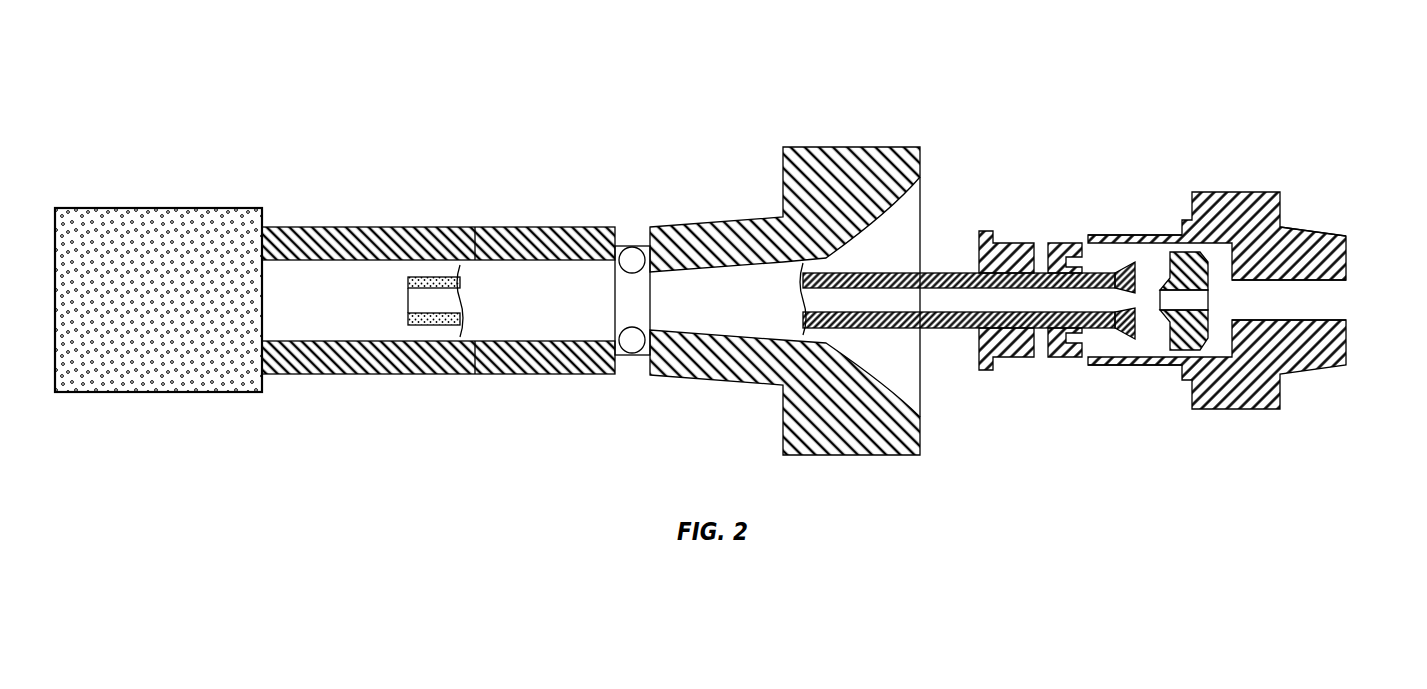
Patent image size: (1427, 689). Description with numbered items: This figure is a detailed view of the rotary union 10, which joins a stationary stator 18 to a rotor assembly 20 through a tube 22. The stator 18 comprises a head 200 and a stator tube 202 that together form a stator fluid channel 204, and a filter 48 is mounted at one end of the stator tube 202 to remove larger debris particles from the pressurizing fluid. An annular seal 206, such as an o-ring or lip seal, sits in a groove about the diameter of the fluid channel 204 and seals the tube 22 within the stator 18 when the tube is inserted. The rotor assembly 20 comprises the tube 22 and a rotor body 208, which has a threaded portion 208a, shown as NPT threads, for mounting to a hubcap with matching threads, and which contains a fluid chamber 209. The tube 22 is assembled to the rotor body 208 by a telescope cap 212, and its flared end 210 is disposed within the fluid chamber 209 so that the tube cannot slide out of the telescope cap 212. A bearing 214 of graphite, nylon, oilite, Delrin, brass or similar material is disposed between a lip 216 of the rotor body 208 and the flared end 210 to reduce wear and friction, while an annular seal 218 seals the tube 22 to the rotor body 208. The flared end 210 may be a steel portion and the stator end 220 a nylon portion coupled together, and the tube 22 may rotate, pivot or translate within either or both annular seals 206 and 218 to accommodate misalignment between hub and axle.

The rotary union 10 is at (942, 88).
The stator 18 is at (733, 167).
The rotor assembly 20 is at (1129, 165).
The tube 22 is at (912, 330).
The filter 48 is at (158, 395).
The head 200 is at (920, 163).
The stator tube 202 is at (407, 218).
The stator fluid channel 204 is at (550, 323).
The annular seal 206 is at (630, 245).
The rotor body 208 is at (1237, 192).
The threaded portion 208a is at (1312, 232).
The fluid chamber 209 is at (1333, 303).
The flared end 210 is at (1140, 300).
The telescope cap 212 is at (1000, 357).
The bearing 214 is at (1212, 273).
The lip 216 is at (1230, 250).
The annular seal 218 is at (1065, 357).
The stator end 220 is at (415, 327).